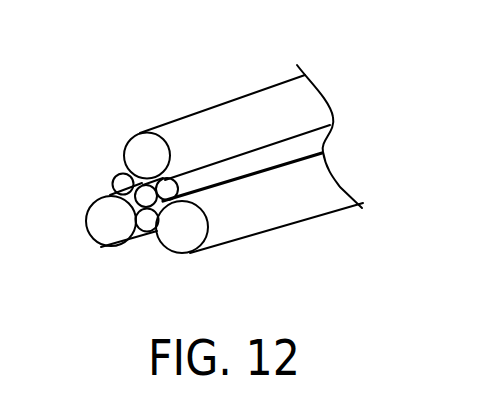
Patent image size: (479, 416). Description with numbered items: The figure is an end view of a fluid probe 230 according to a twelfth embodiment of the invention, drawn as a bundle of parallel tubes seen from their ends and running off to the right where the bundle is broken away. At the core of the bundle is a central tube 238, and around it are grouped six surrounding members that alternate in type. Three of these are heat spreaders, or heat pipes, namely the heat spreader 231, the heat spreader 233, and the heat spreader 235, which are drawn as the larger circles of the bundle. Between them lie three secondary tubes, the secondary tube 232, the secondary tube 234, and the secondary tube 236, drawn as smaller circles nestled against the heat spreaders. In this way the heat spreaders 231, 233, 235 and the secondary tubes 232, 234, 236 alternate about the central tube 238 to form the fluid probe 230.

The fluid probe 230 is at (213, 78).
The heat spreader 231 is at (145, 157).
The secondary tube 232 is at (272, 160).
The heat spreader 233 is at (297, 182).
The secondary tube 234 is at (147, 221).
The heat spreader 235 is at (100, 206).
The secondary tube 236 is at (126, 184).
The central tube 238 is at (148, 193).